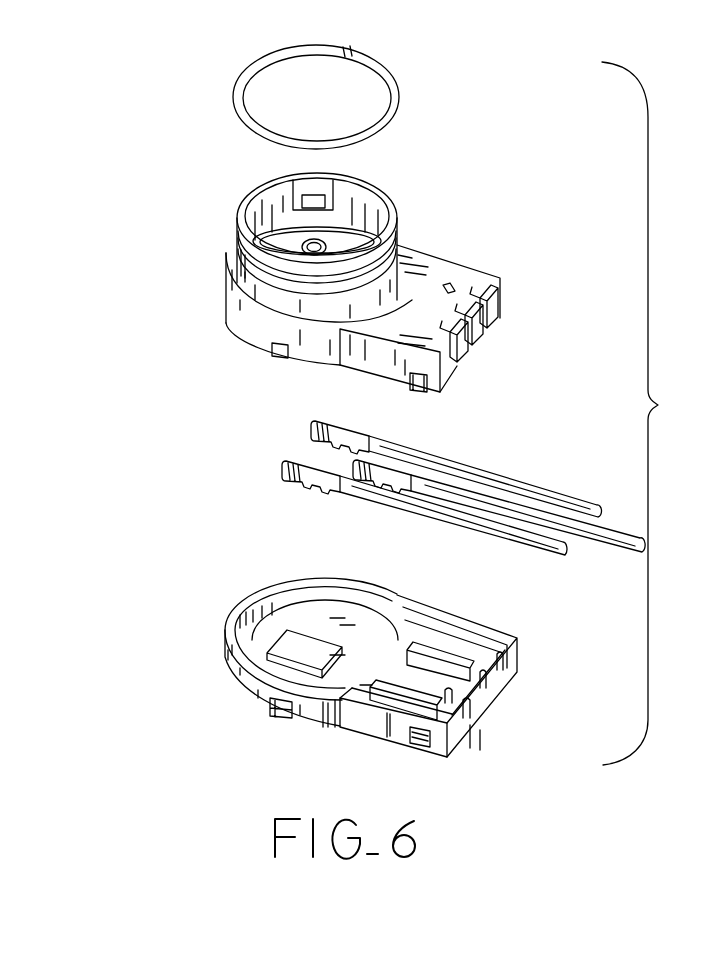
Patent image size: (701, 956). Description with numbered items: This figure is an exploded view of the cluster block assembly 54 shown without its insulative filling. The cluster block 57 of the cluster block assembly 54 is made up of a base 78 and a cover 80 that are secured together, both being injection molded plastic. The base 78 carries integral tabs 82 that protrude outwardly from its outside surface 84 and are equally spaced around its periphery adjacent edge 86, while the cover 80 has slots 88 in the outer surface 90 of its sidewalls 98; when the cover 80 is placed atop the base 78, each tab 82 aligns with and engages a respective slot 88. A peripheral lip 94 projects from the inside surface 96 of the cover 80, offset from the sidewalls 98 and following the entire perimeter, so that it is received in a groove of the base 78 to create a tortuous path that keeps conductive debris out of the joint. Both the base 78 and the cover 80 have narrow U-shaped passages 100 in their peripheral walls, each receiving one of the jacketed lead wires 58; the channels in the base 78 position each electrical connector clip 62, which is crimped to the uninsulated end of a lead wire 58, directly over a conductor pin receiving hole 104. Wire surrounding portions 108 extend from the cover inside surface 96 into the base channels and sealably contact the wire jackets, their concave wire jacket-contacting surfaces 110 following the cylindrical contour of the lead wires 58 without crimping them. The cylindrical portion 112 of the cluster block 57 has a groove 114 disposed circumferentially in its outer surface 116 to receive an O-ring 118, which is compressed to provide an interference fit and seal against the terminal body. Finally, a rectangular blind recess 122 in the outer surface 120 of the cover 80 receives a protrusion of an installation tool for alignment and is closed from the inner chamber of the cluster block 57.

The cluster block assembly 54 is at (646, 413).
The cluster block 57 is at (285, 577).
The lead wires 58 is at (450, 486).
The electrical connector clip 62 is at (310, 430).
The base 78 is at (403, 340).
The cover 80 is at (314, 671).
The tabs 82 is at (420, 392).
The outside surface 84 is at (363, 353).
The edge 86 is at (297, 364).
The slots 88 is at (282, 722).
The outer surface 90 is at (235, 682).
The peripheral lip 94 is at (417, 638).
The inside surface 96 is at (362, 642).
The sidewalls 98 is at (385, 732).
The U-shaped passages 100 is at (490, 330).
The conductor pin receiving holes 104 is at (318, 243).
The wire surrounding portions 108 is at (420, 667).
The wire jacket-contacting surfaces 110 is at (387, 690).
The cylindrical portion 112 is at (314, 231).
The groove 114 is at (263, 288).
The outer surface 116 is at (397, 248).
The O-ring 118 is at (397, 85).
The outer surface 120 is at (309, 712).
The blind recess 122 is at (297, 642).